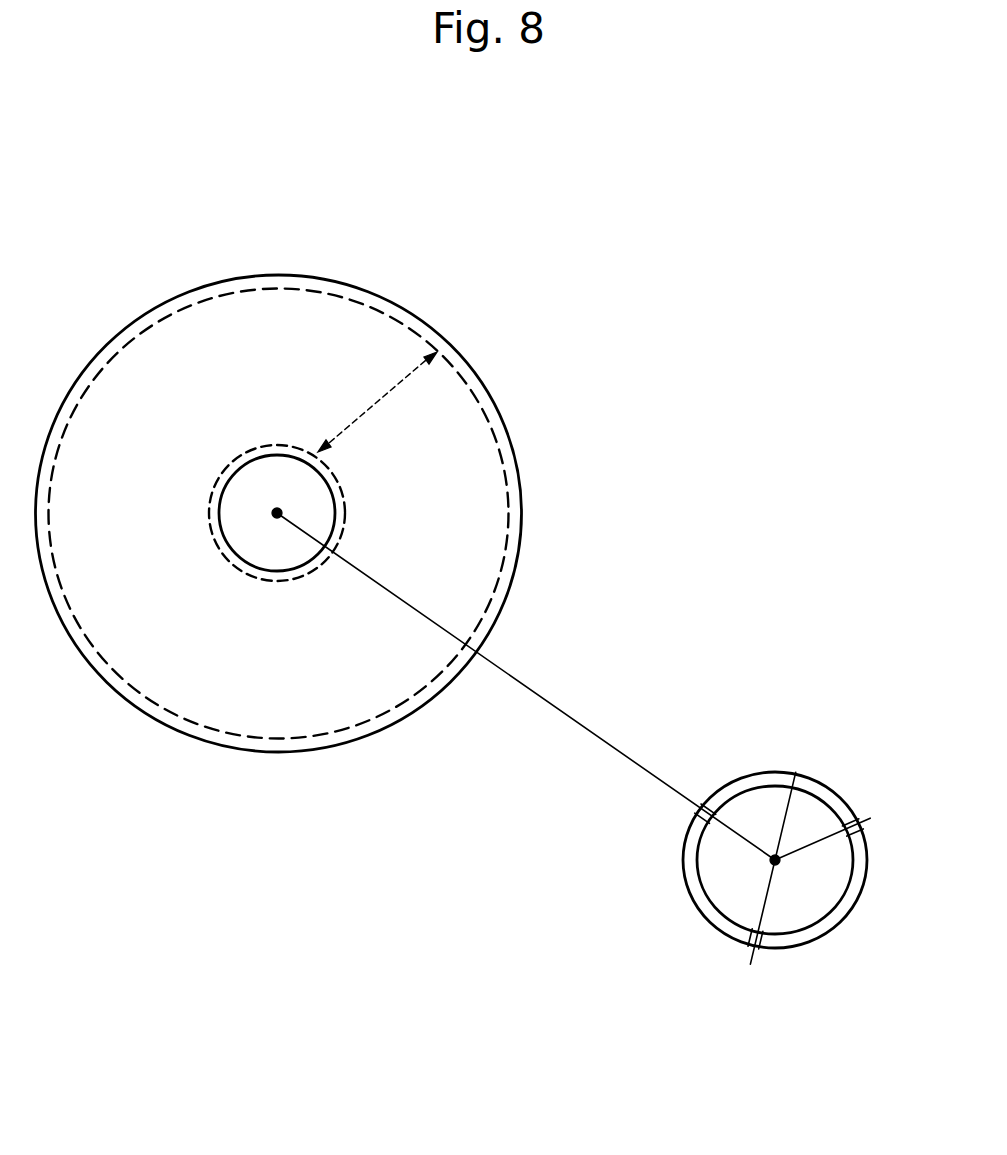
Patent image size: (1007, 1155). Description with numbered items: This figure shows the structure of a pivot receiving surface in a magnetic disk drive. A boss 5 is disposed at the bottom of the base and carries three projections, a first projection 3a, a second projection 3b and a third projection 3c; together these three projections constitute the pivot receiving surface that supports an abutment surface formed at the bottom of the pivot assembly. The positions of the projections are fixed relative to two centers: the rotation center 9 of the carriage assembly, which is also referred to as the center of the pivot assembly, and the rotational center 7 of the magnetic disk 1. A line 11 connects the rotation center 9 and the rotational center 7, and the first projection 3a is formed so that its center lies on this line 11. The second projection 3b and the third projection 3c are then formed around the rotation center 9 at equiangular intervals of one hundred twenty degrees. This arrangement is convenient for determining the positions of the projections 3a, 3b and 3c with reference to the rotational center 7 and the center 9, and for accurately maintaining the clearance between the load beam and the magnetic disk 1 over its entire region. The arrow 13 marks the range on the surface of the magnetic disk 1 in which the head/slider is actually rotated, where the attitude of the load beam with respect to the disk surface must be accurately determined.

The magnetic disk 1 is at (338, 281).
The arrow 13 is at (358, 411).
The rotational center of the magnetic disk 7 is at (275, 513).
The line 11 is at (539, 696).
The boss 5 is at (687, 934).
The rotation center of the carriage assembly 9 is at (797, 775).
The first projection 3a is at (694, 816).
The second projection 3b is at (760, 953).
The third projection 3c is at (857, 819).